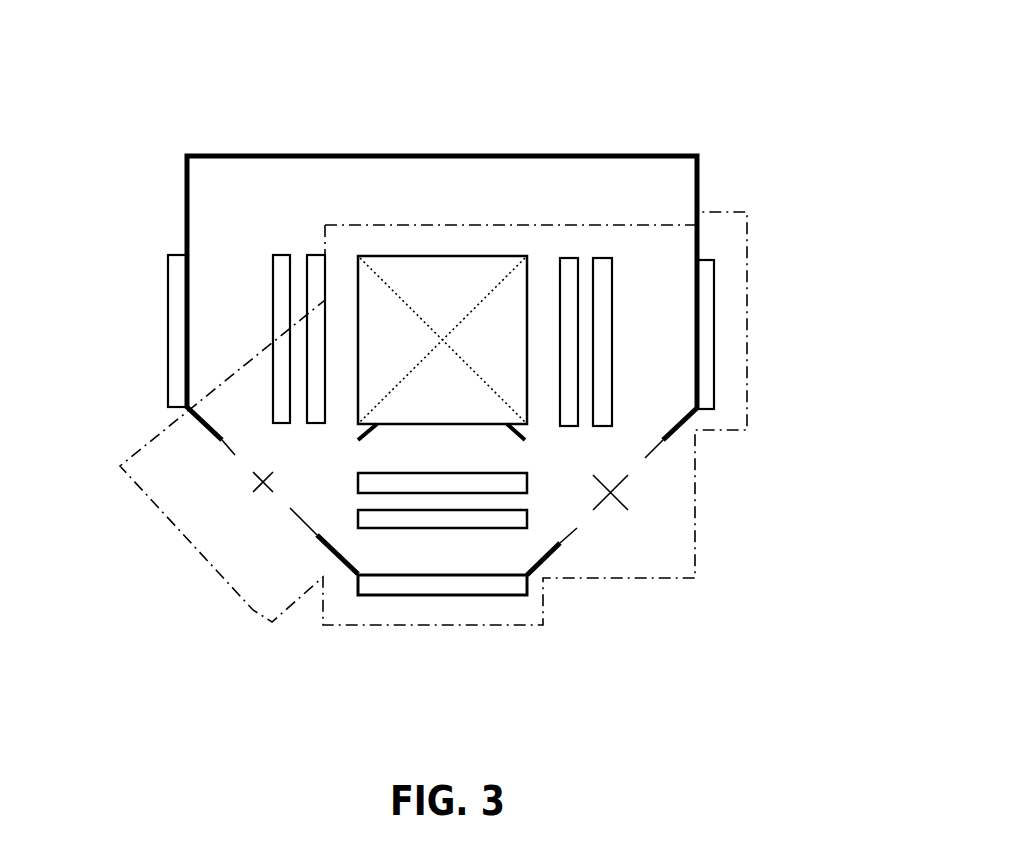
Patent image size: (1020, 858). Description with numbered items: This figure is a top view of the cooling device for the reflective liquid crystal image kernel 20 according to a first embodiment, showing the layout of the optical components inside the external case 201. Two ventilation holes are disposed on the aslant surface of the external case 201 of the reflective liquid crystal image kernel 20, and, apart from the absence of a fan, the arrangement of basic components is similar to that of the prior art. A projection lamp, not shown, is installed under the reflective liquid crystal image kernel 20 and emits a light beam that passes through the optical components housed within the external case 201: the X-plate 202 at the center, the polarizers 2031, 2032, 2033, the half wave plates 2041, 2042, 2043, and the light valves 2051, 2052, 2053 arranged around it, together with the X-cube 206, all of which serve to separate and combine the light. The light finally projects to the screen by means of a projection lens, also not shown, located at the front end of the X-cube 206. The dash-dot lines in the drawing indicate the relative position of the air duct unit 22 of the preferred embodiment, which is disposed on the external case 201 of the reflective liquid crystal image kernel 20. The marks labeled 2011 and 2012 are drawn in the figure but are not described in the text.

The reflective liquid crystal image kernel 20 is at (722, 135).
The external case 201 is at (320, 156).
The first reference point 2011 is at (600, 487).
The second reference point 2012 is at (290, 508).
The X-plate 202 is at (378, 273).
The polarizer 2031 is at (560, 258).
The polarizer 2032 is at (355, 495).
The polarizer 2033 is at (307, 256).
The half wave plate 2041 is at (595, 258).
The half wave plate 2042 is at (360, 528).
The half wave plate 2043 is at (273, 256).
The light valve 2051 is at (714, 307).
The light valve 2052 is at (450, 595).
The light valve 2053 is at (168, 355).
The X-cube 206 is at (462, 256).
The air duct unit 22 is at (697, 492).